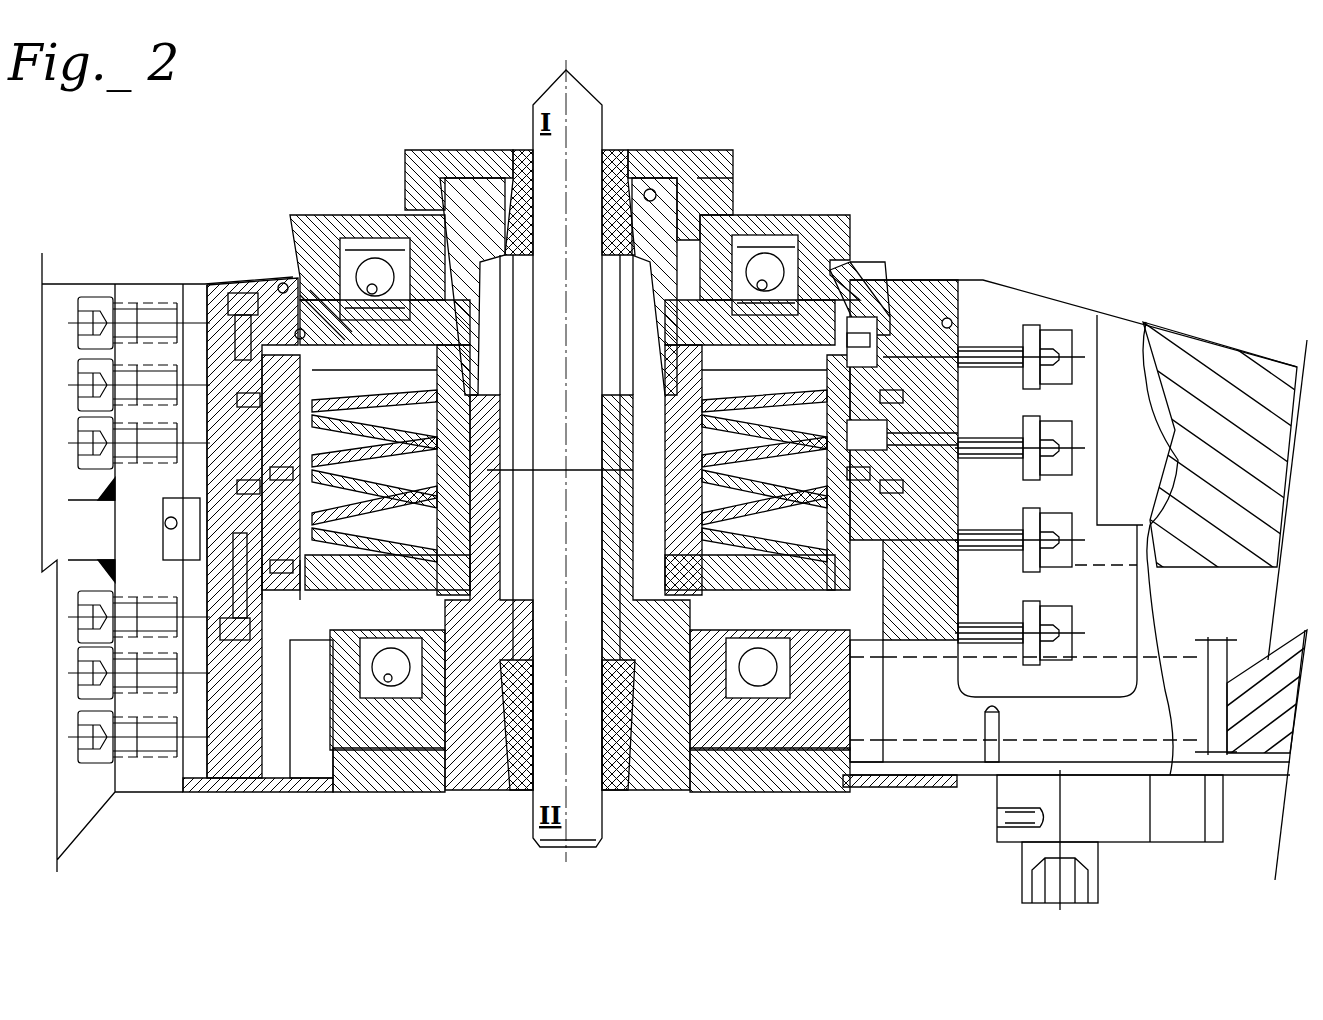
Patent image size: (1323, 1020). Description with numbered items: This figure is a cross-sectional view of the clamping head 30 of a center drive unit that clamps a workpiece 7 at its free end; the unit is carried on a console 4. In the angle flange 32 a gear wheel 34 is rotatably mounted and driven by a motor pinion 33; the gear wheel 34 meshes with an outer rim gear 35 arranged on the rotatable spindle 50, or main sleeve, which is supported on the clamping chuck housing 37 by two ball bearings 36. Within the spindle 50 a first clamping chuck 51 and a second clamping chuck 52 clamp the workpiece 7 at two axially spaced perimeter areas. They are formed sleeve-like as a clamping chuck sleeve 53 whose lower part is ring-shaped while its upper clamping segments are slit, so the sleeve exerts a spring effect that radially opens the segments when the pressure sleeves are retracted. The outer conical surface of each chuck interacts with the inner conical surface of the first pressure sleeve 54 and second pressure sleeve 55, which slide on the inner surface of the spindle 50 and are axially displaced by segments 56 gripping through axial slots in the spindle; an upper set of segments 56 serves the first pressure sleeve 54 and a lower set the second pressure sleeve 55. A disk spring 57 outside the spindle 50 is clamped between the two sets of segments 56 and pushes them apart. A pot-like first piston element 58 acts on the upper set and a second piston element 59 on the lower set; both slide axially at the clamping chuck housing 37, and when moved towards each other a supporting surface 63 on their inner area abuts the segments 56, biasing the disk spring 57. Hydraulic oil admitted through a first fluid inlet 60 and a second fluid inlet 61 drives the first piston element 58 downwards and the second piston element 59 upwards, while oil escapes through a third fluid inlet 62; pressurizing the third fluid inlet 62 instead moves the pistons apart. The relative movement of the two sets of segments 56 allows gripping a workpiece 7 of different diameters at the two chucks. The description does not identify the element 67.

The console 4 is at (133, 290).
The workpiece 7 is at (592, 834).
The clamping head 30 is at (752, 172).
The angle flange 32 is at (1120, 325).
The motor pinion 33 is at (1260, 740).
The gear wheel 34 is at (918, 720).
The outer rim gear 35 is at (290, 710).
The ball bearings 36 is at (370, 265).
The clamping chuck housing 37 is at (257, 287).
The spindle 50 is at (445, 690).
The first clamping chuck 51 is at (522, 155).
The second clamping chuck 52 is at (523, 790).
The clamping chuck sleeve 53 is at (737, 277).
The first pressure sleeve 54 is at (447, 203).
The second pressure sleeve 55 is at (657, 727).
The segments 56 is at (418, 330).
The disk spring 57 is at (901, 318).
The first piston element 58 is at (303, 307).
The second piston element 59 is at (303, 578).
The first fluid inlet 60 is at (943, 430).
The second fluid inlet 61 is at (940, 545).
The third fluid inlet 62 is at (963, 385).
The supporting surface 63 is at (780, 270).
The plate 67 is at (402, 790).